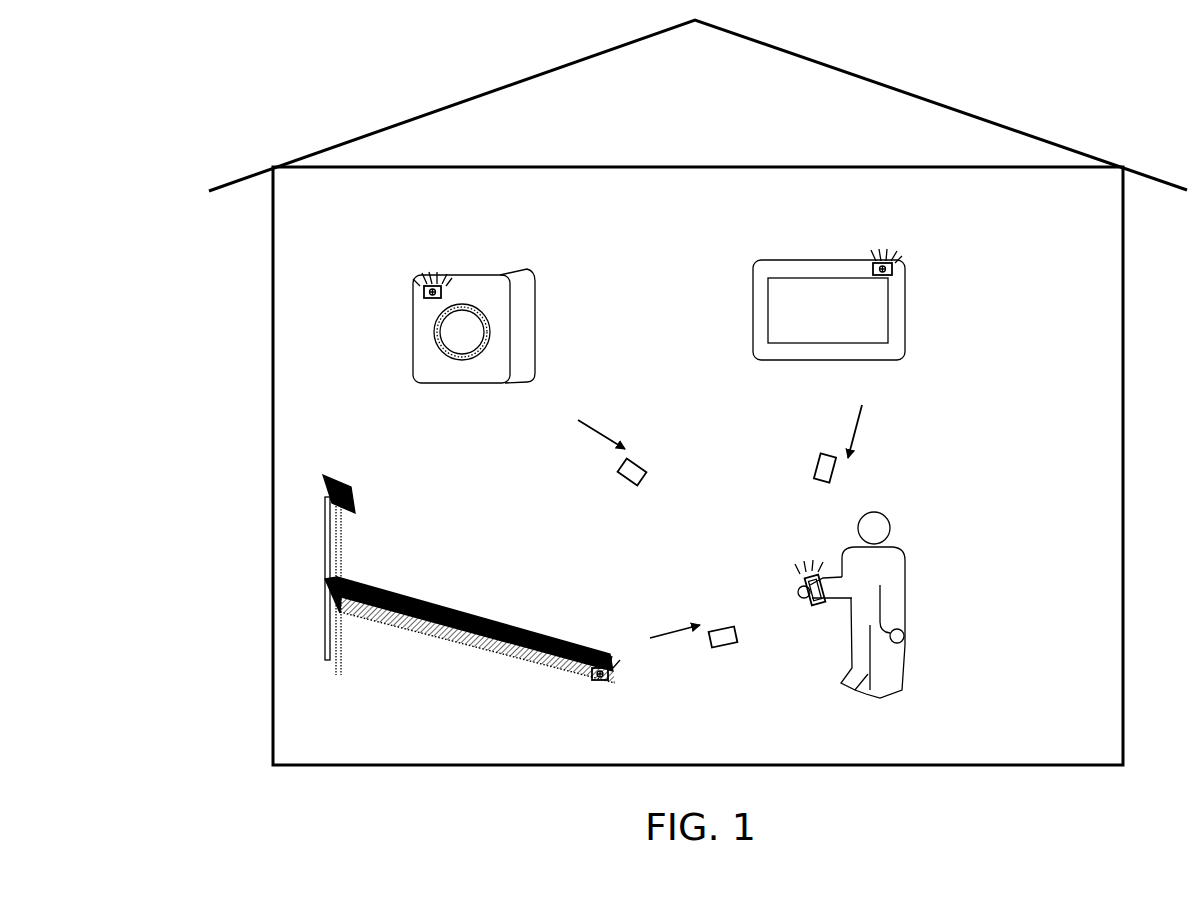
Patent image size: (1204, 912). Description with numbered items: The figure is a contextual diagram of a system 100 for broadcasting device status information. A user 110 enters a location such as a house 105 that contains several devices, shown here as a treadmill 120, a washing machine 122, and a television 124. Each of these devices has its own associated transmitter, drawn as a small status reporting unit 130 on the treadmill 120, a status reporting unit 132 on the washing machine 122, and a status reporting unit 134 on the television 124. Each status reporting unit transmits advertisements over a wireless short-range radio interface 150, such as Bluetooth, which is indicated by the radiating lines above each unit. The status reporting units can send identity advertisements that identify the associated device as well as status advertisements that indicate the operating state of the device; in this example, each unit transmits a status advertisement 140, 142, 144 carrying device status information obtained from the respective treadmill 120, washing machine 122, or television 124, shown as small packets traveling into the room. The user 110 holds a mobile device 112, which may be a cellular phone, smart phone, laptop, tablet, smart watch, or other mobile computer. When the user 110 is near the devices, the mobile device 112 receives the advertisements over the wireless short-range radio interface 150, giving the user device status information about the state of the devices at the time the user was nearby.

The system 100 is at (1131, 333).
The house 105 is at (1048, 166).
The user 110 is at (890, 585).
The mobile device 112 is at (810, 607).
The treadmill 120 is at (455, 606).
The washing machine 122 is at (476, 375).
The television 124 is at (759, 303).
The status reporting unit 130 is at (595, 683).
The status reporting unit 132 is at (424, 289).
The status reporting unit 134 is at (895, 268).
The status advertisement 140 is at (716, 645).
The status advertisement 142 is at (635, 476).
The status advertisement 144 is at (815, 470).
The wireless short-range radio interface 150 is at (440, 275).